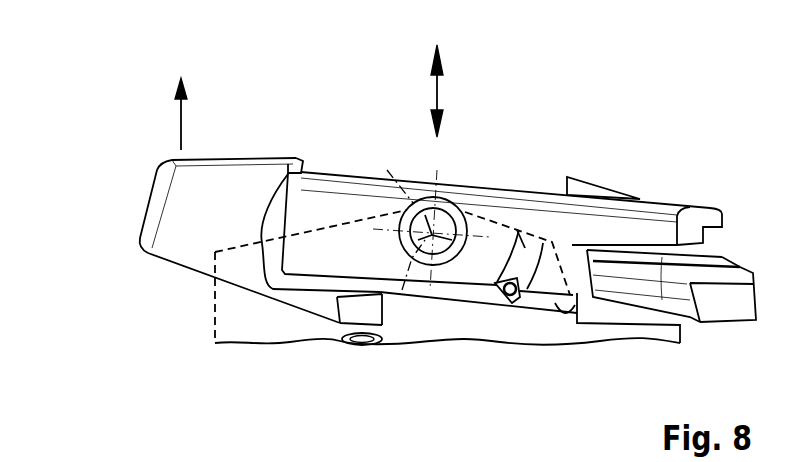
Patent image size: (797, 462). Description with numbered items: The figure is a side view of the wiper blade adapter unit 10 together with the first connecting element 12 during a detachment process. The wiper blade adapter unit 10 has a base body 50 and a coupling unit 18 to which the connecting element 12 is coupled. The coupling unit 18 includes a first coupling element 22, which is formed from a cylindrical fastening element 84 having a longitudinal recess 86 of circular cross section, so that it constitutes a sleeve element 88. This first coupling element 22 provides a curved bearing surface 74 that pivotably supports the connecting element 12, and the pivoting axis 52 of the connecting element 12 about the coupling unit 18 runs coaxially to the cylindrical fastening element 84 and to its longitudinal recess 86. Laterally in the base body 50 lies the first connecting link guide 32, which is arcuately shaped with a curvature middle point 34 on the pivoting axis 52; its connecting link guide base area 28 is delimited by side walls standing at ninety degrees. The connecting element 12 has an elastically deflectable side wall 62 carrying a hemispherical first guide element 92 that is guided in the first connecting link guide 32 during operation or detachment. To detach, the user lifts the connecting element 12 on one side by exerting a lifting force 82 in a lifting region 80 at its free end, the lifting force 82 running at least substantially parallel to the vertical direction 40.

The wiper blade adapter unit 10 is at (128, 308).
The first connecting element 12 is at (652, 140).
The coupling unit 18 is at (572, 220).
The first coupling element 22 is at (416, 173).
The connecting link guide base area 28 is at (531, 292).
The first connecting link guide 32 is at (530, 250).
The curvature middle point 34 is at (402, 290).
The vertical direction 40 is at (437, 93).
The base body 50 is at (233, 315).
The pivoting axis 52 is at (387, 170).
The first elastically deflectable side wall 62 is at (320, 307).
The curved bearing surface 74 is at (452, 200).
The lifting region 80 is at (98, 200).
The lifting force 82 is at (181, 122).
The cylindrical fastening element 84 is at (468, 218).
The longitudinal recess 86 is at (443, 253).
The sleeve element 88 is at (432, 197).
The first guide element 92 is at (517, 300).